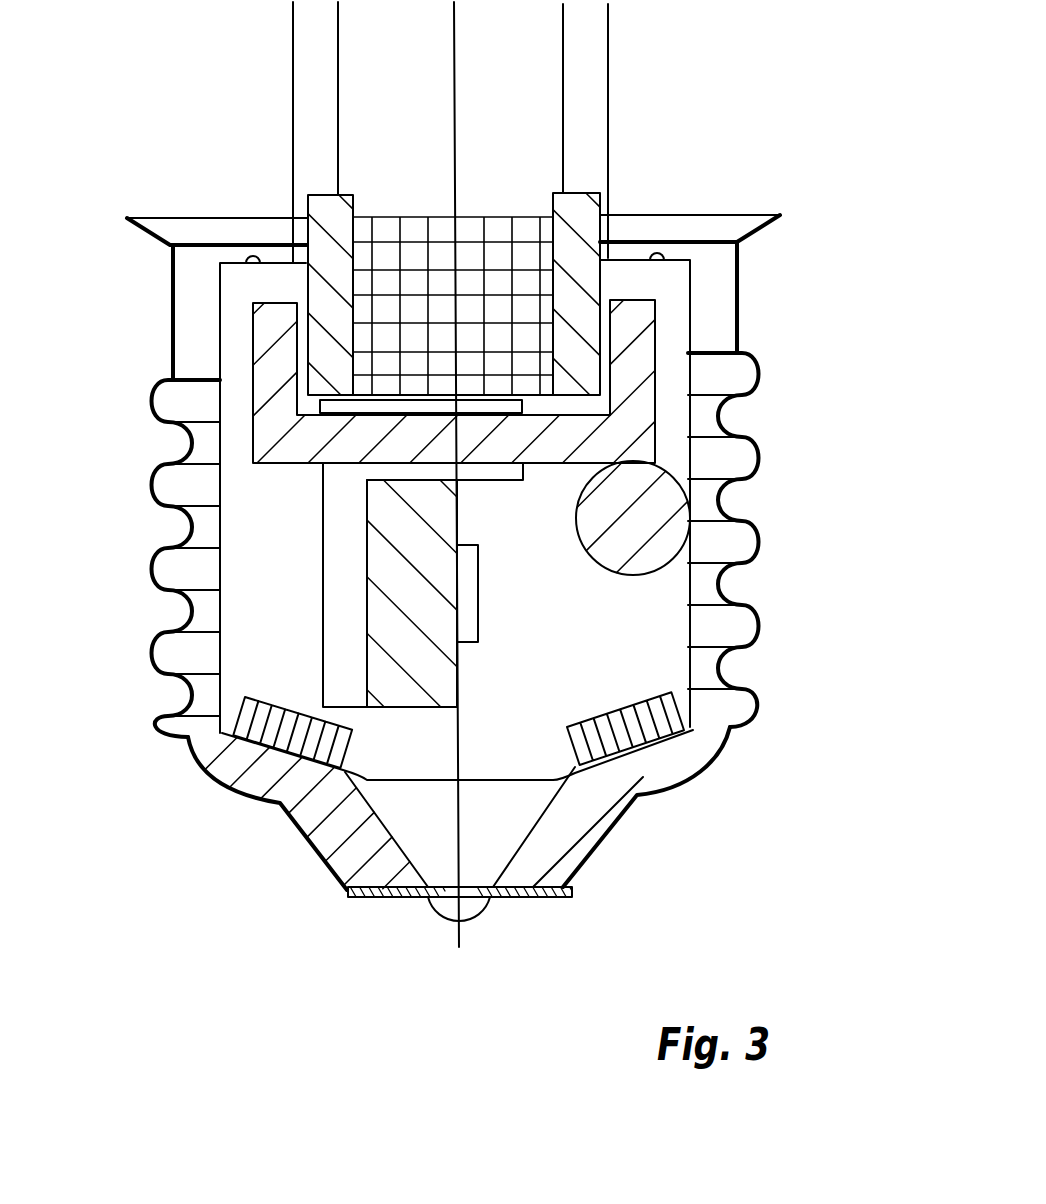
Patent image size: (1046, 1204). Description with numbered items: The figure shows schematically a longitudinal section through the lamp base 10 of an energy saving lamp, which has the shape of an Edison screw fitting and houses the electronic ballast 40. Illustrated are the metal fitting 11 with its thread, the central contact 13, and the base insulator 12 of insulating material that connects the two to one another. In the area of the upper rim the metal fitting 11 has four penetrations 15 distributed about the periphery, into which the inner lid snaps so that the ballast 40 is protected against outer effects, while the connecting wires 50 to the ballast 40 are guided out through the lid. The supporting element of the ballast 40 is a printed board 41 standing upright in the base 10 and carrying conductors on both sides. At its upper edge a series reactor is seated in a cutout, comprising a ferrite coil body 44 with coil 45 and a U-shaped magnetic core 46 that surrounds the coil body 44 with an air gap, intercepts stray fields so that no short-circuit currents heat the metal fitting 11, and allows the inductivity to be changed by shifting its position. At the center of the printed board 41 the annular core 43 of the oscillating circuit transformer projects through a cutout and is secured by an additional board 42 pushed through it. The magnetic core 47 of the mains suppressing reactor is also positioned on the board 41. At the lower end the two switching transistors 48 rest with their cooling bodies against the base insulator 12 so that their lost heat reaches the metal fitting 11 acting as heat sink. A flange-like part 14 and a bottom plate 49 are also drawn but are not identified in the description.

The lamp base 10 is at (817, 400).
The metal fitting 11 is at (760, 610).
The base insulator 12 is at (573, 825).
The central contact 13 is at (505, 897).
The mounting flange 14 is at (760, 227).
The penetrations 15 is at (657, 252).
The electronic ballast 40 is at (720, 472).
The printed board 41 is at (565, 658).
The additional board 42 is at (345, 549).
The annular core 43 is at (407, 668).
The ferrite coil body 44 is at (608, 223).
The coil 45 is at (471, 294).
The U-shaped magnetic core 46 is at (280, 388).
The magnetic core of the mains suppressing reactor 47 is at (653, 540).
The switching transistors 48 is at (645, 745).
The nozzle plate 49 is at (387, 897).
The connecting wires 50 is at (608, 97).